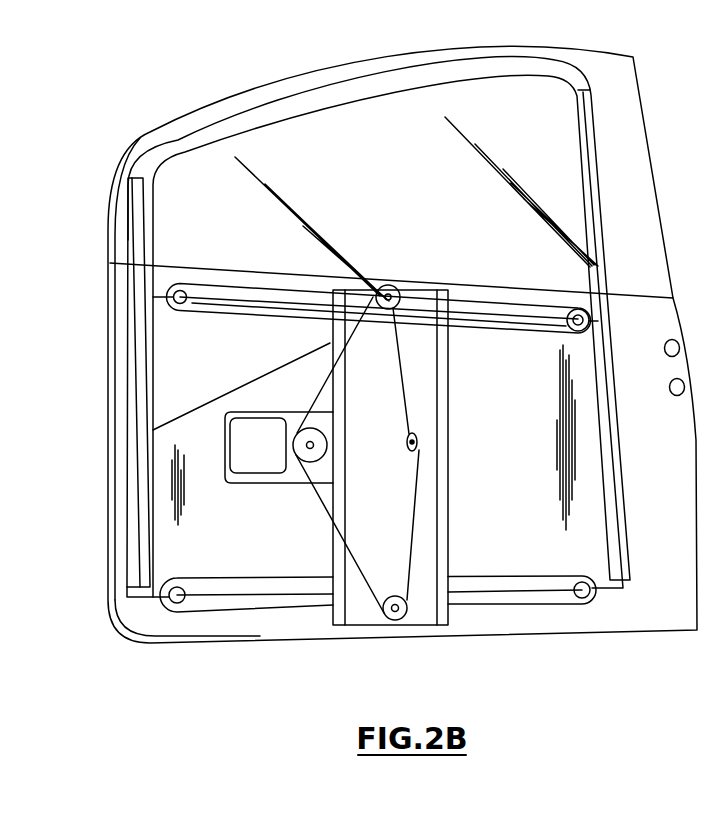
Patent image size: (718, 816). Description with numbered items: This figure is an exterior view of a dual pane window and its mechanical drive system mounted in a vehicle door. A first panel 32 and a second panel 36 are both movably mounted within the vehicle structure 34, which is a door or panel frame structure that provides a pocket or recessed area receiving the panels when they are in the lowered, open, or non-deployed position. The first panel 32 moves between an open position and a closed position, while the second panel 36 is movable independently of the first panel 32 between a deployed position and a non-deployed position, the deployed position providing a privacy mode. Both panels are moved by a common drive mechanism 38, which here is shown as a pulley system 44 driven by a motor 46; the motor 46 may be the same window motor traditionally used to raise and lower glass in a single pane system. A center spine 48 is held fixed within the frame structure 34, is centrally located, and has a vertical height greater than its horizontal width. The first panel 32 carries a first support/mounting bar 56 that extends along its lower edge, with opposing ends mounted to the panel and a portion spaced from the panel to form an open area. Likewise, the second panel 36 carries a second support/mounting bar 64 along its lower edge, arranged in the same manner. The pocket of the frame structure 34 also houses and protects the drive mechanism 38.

The first panel 32 is at (540, 178).
The vehicle structure 34 is at (120, 411).
The second panel 36 is at (550, 558).
The drive mechanism 38 is at (251, 497).
The pulley system 44 is at (411, 485).
The motor 46 is at (253, 433).
The center spine 48 is at (362, 613).
The first support/mounting bar 56 is at (248, 302).
The second support/mounting bar 64 is at (240, 603).